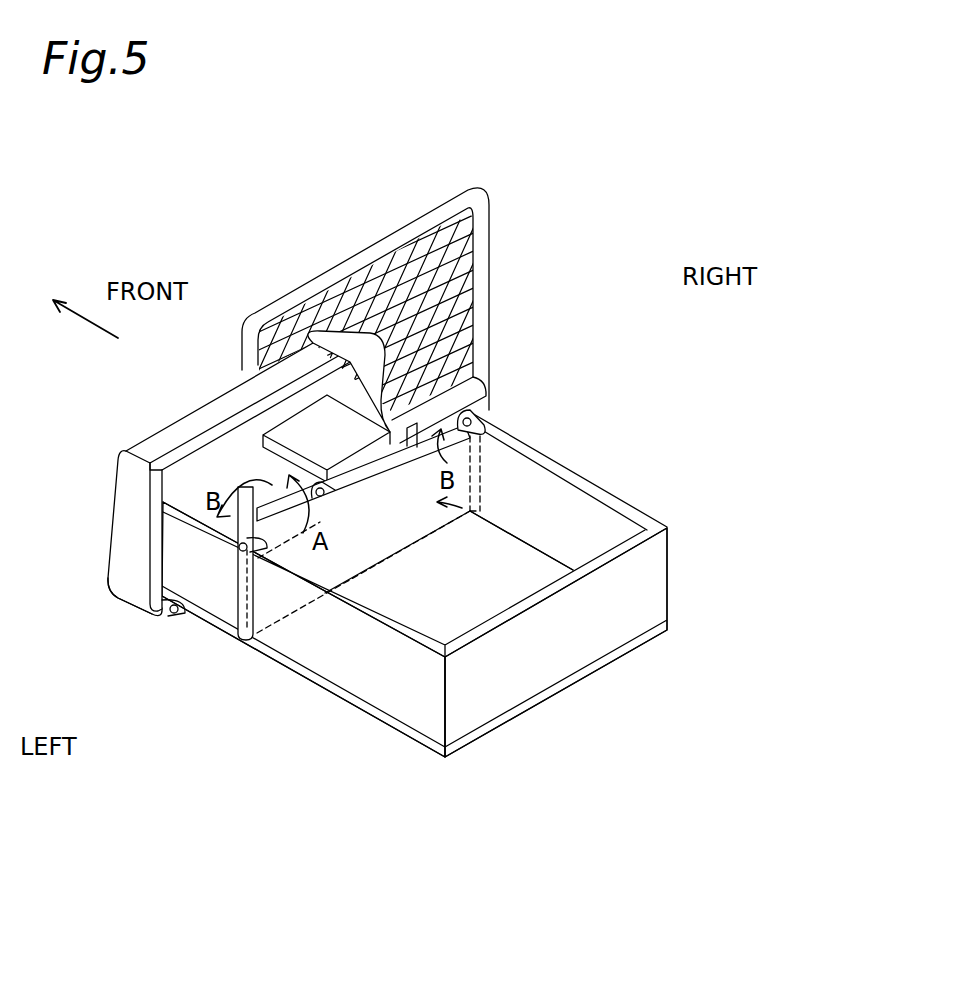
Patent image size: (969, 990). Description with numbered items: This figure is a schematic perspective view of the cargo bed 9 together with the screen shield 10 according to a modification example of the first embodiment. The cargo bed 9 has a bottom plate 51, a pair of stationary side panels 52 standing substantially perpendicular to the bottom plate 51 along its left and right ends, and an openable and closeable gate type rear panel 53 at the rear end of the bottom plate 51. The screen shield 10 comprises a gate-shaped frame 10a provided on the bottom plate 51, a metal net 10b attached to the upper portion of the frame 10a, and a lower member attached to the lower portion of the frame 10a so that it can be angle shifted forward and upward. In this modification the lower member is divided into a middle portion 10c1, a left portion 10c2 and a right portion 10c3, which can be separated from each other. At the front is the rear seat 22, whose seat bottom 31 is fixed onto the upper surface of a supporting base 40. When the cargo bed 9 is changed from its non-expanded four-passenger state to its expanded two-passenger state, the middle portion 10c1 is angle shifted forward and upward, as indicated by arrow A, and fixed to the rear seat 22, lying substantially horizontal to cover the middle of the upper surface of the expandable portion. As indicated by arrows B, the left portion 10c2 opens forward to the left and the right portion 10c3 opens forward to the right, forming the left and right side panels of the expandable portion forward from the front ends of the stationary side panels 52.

The cargo bed 9 is at (645, 434).
The screen shield 10 is at (523, 186).
The frame 10a is at (417, 220).
The metal net 10b is at (368, 313).
The middle portion 10c1 is at (310, 427).
The left portion 10c2 is at (200, 570).
The right portion 10c3 is at (520, 437).
The rear seat 22 is at (104, 613).
The seat bottom 31 is at (123, 527).
The supporting base 40 is at (150, 570).
The bottom plate 51 is at (487, 560).
The stationary side panel 52 is at (407, 693).
The rear panel 53 is at (570, 640).